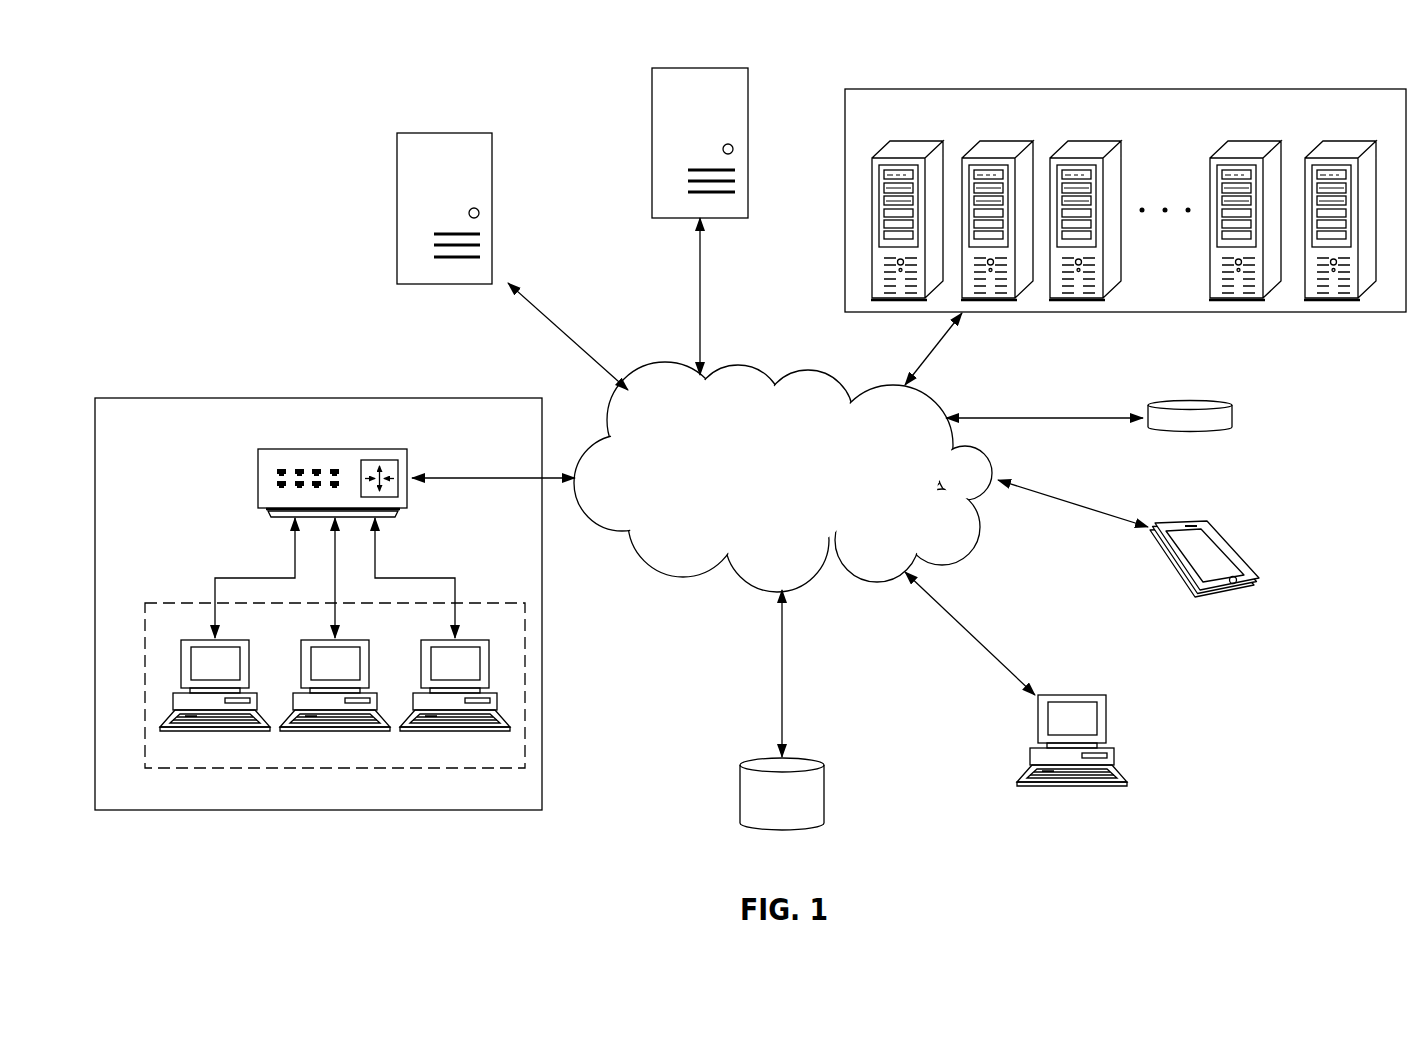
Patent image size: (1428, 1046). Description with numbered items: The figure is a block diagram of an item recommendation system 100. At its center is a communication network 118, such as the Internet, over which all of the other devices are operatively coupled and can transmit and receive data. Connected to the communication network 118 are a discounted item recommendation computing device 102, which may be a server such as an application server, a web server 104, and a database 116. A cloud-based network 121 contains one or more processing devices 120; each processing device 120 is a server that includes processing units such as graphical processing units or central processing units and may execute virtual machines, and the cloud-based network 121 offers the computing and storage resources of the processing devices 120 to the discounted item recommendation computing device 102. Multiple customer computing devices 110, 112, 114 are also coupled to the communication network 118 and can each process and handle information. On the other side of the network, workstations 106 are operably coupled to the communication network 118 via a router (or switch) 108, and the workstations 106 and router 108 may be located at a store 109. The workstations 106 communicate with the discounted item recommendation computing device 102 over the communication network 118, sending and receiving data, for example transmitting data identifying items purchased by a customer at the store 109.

The item recommendation system 100 is at (992, 42).
The discounted item recommendation computing device 102 is at (725, 68).
The web server 104 is at (418, 133).
The workstation(s) 106 is at (183, 603).
The router (or switch) 108 is at (284, 449).
The store 109 is at (175, 398).
The customer computing device 110 is at (1206, 403).
The customer computing device 112 is at (1232, 555).
The customer computing device 114 is at (1097, 695).
The database 116 is at (812, 760).
The communication network 118 is at (745, 371).
The processing device 120 is at (902, 141).
The cloud-based network 121 is at (1200, 89).